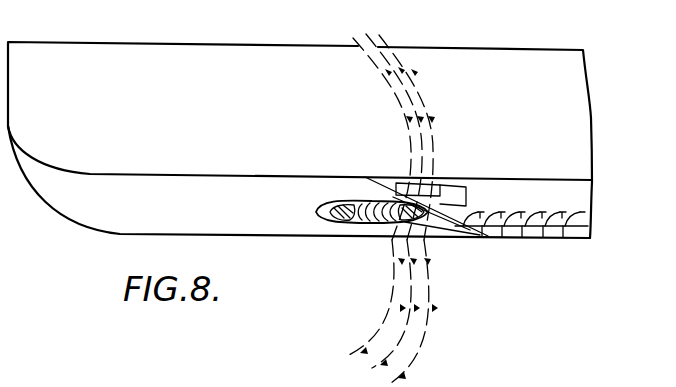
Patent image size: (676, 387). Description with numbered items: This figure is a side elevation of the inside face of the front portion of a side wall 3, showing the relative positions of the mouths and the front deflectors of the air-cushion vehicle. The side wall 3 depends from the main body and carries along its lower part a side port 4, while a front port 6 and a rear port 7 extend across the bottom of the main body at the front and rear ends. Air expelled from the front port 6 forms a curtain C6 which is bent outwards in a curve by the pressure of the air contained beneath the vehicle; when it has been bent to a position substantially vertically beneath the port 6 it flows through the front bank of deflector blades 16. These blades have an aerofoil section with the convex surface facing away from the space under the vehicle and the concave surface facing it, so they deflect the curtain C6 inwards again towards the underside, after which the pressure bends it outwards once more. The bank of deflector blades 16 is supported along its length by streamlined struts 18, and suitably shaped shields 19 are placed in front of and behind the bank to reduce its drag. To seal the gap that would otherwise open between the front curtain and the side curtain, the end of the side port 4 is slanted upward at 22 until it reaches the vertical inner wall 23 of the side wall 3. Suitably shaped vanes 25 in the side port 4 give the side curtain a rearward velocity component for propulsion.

The side wall 3 is at (100, 52).
The vertical inner wall 23 is at (244, 123).
The front port 6 is at (358, 34).
The air curtain C6 is at (424, 89).
The strut 18 is at (318, 209).
The front bank of deflector blades 16 is at (368, 223).
The shield 19 is at (340, 223).
The slanted port end 22 is at (448, 196).
The vane 25 is at (568, 214).
The side port 4 is at (506, 231).
The rear port 7 is at (256, 381).